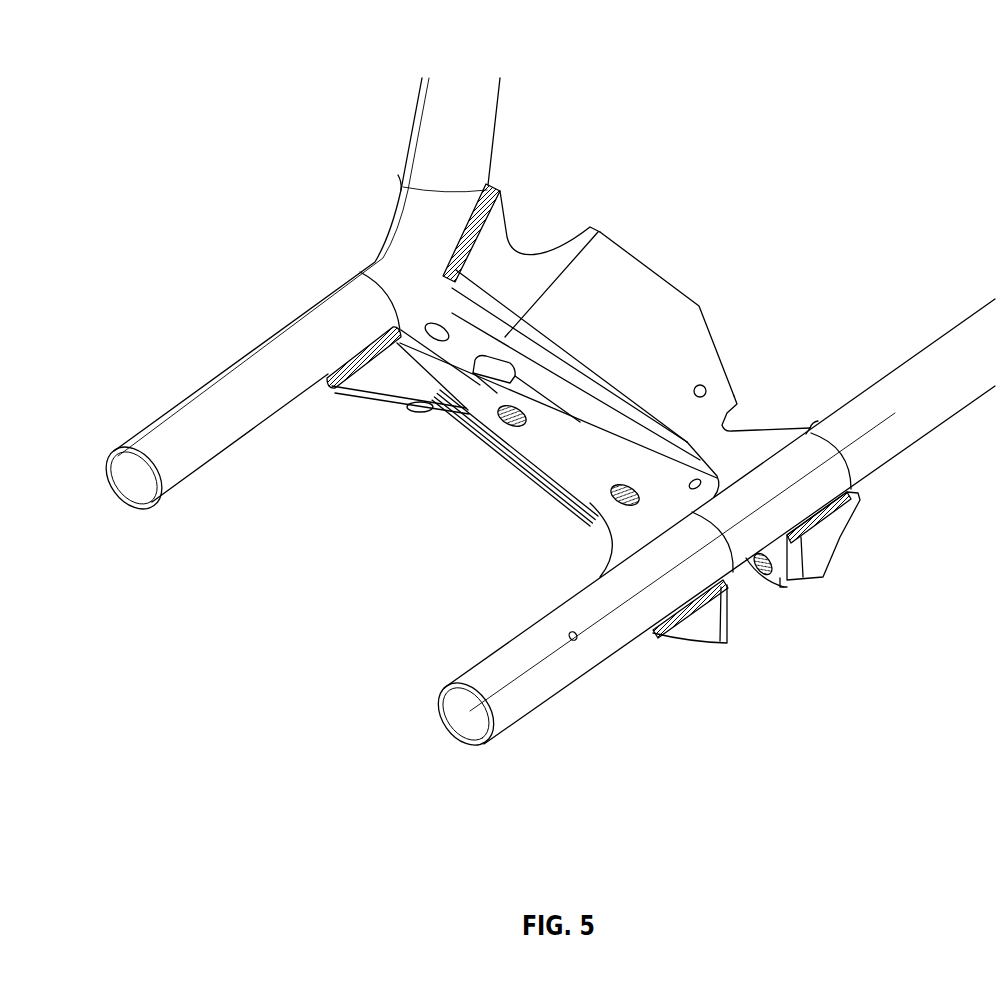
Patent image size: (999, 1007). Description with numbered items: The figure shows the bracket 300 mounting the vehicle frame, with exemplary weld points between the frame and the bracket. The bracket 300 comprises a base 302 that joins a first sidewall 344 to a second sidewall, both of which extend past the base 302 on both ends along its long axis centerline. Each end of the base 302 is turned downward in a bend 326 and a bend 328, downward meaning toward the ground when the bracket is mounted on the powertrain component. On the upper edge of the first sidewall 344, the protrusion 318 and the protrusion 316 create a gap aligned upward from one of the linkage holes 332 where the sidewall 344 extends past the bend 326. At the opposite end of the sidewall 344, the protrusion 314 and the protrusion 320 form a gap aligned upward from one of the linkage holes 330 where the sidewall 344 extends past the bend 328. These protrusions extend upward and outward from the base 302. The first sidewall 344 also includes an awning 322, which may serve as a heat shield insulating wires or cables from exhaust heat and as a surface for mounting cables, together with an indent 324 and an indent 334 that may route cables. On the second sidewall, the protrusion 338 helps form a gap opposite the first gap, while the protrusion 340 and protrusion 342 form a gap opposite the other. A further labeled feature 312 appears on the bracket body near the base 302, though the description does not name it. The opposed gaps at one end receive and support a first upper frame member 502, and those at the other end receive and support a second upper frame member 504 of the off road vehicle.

The bracket 300 is at (759, 80).
The base 302 is at (553, 437).
The tab 312 is at (593, 497).
The protrusion 314 is at (817, 423).
The protrusion 316 is at (497, 187).
The protrusion 318 is at (401, 183).
The protrusion 320 is at (837, 537).
The awning 322 is at (633, 277).
The indent 324 is at (527, 232).
The bend 326 is at (495, 403).
The bend 328 is at (615, 514).
The linkage hole 330 is at (770, 582).
The linkage hole 332 is at (421, 320).
The indent 334 is at (743, 420).
The protrusion 338 is at (365, 368).
The protrusion 340 is at (610, 537).
The protrusion 342 is at (728, 645).
The first sidewall 344 is at (472, 305).
The first upper frame member 502 is at (215, 422).
The second upper frame member 504 is at (560, 672).